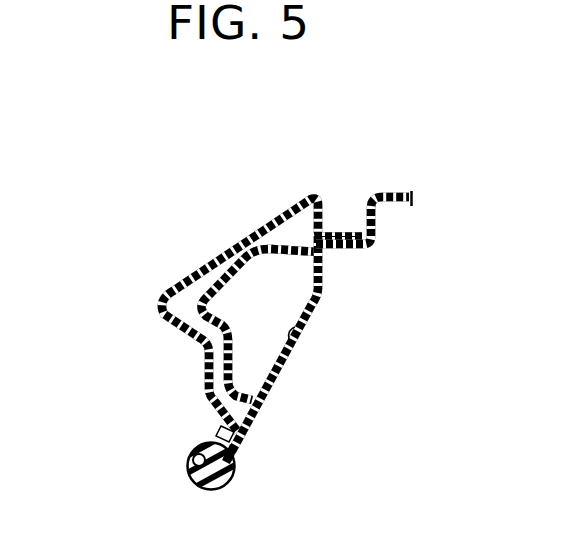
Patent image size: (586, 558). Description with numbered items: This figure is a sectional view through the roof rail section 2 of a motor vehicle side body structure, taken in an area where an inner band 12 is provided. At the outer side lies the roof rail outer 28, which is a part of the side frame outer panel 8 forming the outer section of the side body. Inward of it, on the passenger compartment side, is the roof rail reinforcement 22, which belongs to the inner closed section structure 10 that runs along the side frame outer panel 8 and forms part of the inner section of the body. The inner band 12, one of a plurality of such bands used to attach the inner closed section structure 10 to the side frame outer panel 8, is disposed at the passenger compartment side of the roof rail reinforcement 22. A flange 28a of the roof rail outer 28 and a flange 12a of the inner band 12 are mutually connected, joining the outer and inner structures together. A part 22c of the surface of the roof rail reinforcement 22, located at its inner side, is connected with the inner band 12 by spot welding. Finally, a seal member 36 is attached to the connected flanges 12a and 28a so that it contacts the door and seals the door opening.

The roof rail section 2 is at (234, 178).
The side frame outer panel 8 is at (223, 309).
The roof rail outer 28 is at (205, 262).
The flange of the roof rail outer 28a is at (343, 236).
The inner closed section structure 10 is at (184, 324).
The roof rail reinforcement 22 is at (203, 290).
The part of the surface of the roof rail reinforcement 22c is at (297, 333).
The inner band 12 is at (262, 408).
The flange of the inner band 12a is at (340, 262).
The seal member 36 is at (193, 488).